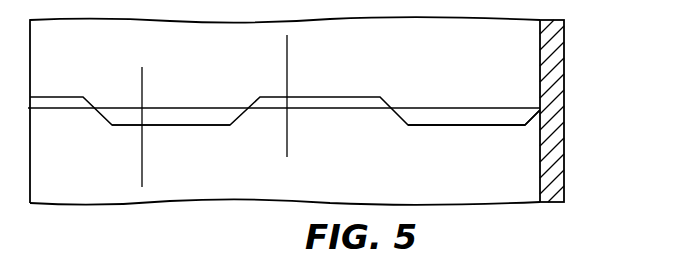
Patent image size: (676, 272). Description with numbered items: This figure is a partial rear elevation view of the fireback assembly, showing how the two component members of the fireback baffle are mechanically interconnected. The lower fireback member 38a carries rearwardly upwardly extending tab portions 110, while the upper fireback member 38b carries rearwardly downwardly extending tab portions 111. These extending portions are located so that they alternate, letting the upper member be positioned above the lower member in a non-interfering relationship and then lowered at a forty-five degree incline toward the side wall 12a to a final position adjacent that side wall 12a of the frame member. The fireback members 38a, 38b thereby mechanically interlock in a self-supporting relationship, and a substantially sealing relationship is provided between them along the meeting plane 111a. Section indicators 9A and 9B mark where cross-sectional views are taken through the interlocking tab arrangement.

The tab portions 110 is at (77, 94).
The tab portions 111 is at (202, 124).
The meeting plane 111a is at (483, 107).
The side wall 12a is at (566, 120).
The section line 9A is at (316, 38).
The section line 9B is at (174, 68).
The fireback member 38a is at (296, 190).
The fireback member 38b is at (489, 71).